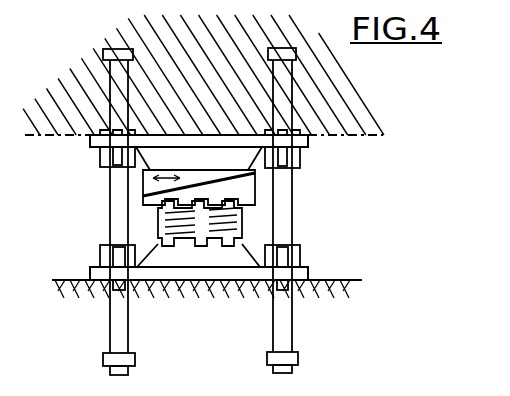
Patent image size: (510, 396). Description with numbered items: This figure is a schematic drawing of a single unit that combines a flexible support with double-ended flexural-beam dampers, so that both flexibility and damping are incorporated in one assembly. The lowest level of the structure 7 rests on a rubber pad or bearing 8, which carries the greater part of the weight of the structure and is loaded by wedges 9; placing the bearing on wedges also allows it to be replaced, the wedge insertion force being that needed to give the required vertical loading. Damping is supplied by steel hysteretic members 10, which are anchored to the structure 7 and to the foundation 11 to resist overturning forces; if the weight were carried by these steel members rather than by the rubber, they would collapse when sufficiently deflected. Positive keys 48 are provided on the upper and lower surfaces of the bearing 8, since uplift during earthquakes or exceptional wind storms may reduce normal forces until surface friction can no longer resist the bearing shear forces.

The structure 7 is at (209, 78).
The rubber pad or bearing 8 is at (200, 223).
The wedges 9 is at (230, 206).
The steel members 10 is at (118, 217).
The foundation 11 is at (205, 336).
The positive keys 48 is at (200, 247).